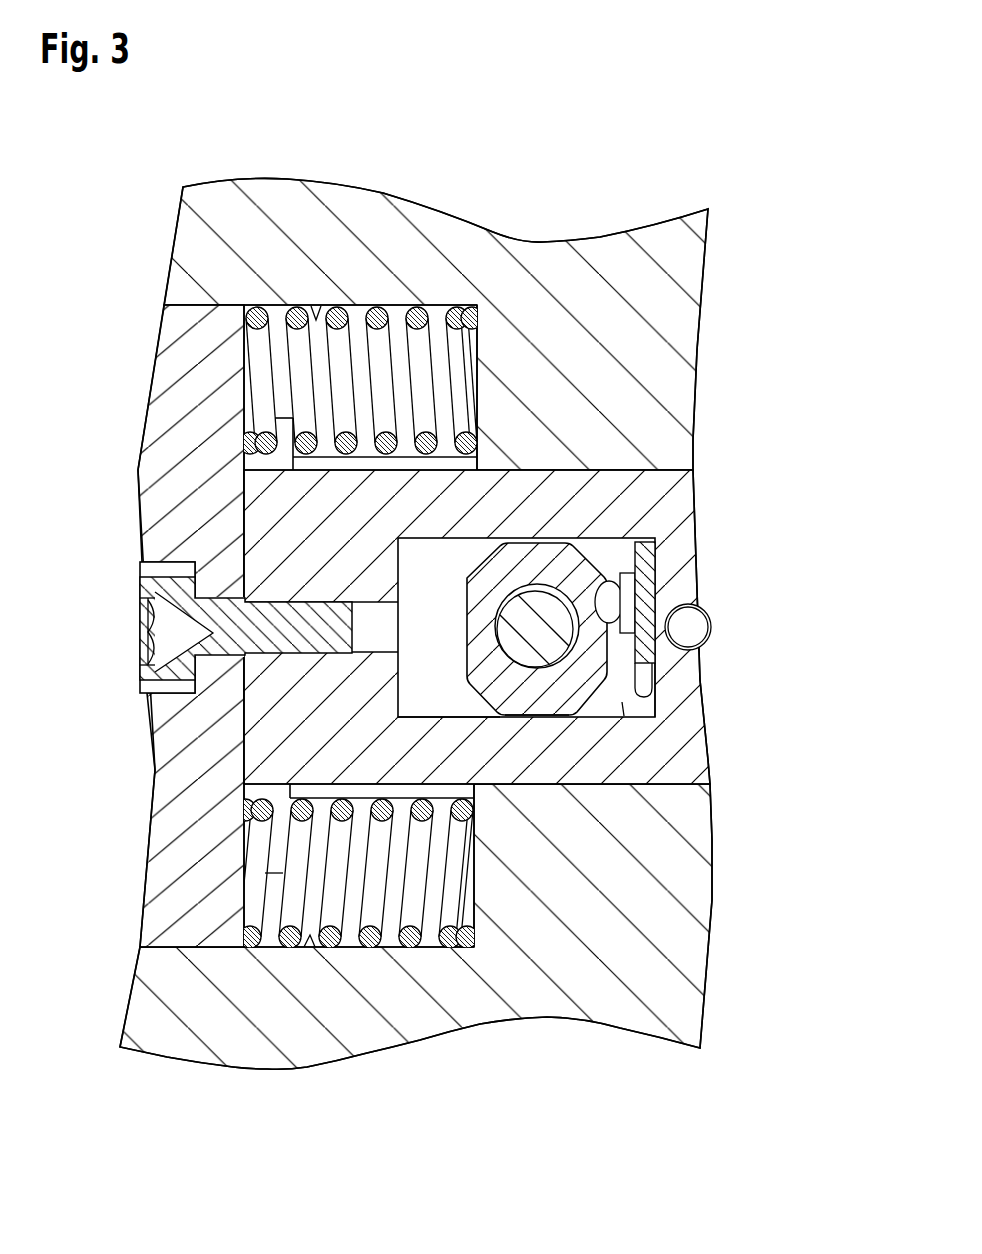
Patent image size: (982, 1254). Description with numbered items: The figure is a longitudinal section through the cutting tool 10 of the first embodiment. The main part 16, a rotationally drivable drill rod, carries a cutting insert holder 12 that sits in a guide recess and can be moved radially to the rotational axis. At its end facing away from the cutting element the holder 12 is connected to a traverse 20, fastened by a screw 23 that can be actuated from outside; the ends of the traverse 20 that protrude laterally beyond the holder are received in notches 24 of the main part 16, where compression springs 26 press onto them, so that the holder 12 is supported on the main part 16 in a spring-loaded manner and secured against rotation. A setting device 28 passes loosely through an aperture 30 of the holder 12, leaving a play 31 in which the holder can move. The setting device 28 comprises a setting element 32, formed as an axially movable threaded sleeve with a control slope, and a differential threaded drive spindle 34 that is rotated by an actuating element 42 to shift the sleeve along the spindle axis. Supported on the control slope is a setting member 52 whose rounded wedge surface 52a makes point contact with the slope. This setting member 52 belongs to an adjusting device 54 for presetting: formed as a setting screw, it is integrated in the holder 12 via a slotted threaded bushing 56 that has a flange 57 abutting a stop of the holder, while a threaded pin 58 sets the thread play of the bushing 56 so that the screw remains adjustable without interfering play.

The cutting tool 10 is at (172, 158).
The cutting insert holder 12 is at (283, 748).
The main part 16 is at (538, 322).
The traverse 20 is at (190, 452).
The screw 23 is at (213, 633).
The notches 24 is at (323, 307).
The compression springs 26 is at (378, 313).
The setting device 28 is at (626, 549).
The aperture 30 is at (622, 702).
The play 31 is at (423, 695).
The setting element 32 is at (530, 693).
The drive spindle 34 is at (555, 648).
The actuating element 42 is at (425, 567).
The setting member 52 is at (721, 604).
The rounded wedge surface 52a is at (613, 560).
The adjusting device 54 is at (665, 672).
The threaded bushing 56 is at (705, 593).
The flange 57 is at (643, 568).
The threaded pin 58 is at (687, 630).